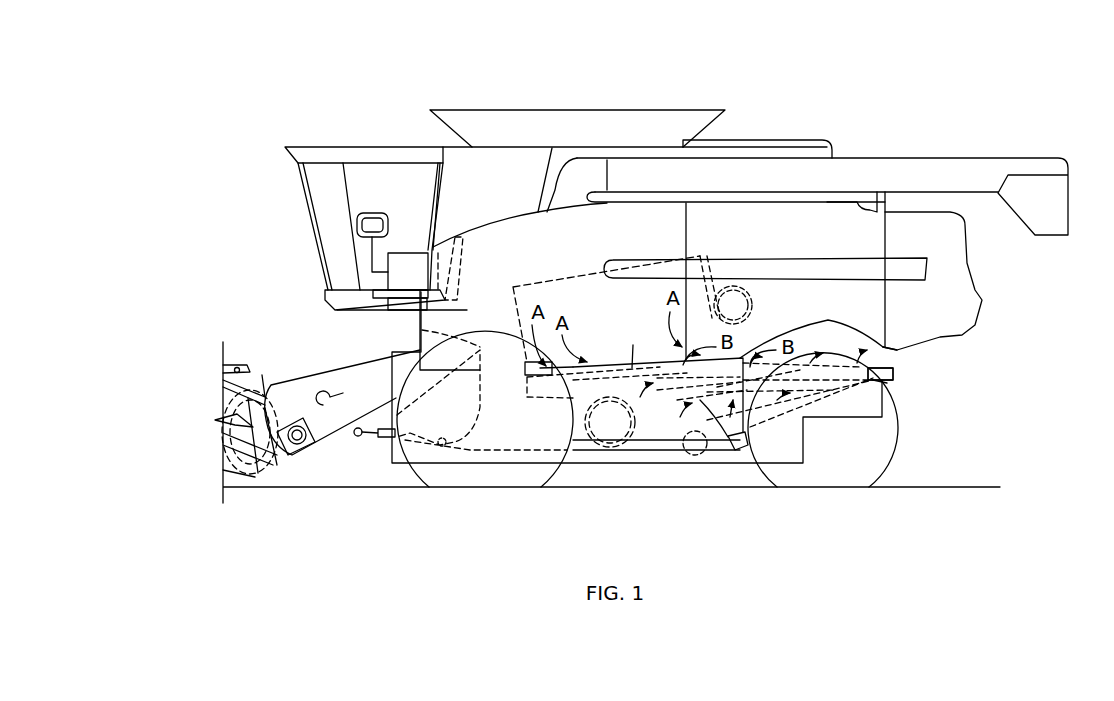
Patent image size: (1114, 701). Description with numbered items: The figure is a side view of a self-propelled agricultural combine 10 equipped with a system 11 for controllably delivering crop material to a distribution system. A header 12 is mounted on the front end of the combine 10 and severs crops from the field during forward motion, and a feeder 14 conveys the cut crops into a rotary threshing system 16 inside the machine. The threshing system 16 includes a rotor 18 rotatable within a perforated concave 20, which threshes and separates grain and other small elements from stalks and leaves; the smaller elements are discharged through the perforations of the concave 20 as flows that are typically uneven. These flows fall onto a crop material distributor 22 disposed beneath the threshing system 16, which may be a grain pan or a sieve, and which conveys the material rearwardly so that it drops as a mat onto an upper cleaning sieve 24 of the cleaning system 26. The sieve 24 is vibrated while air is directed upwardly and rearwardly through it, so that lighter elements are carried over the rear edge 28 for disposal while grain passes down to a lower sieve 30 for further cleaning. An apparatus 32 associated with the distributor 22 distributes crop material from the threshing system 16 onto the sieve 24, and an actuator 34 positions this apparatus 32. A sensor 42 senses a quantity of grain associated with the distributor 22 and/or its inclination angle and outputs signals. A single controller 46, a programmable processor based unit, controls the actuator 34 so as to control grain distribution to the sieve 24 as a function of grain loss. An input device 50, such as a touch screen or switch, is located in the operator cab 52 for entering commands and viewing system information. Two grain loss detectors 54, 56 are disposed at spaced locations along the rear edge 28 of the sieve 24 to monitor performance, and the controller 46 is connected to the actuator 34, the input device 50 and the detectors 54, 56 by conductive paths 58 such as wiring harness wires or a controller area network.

The agricultural combine 10 is at (905, 70).
The system 11 is at (770, 122).
The header 12 is at (233, 357).
The feeder 14 is at (300, 382).
The rotary threshing system 16 is at (560, 283).
The rotor 18 is at (697, 252).
The perforated concave 20 is at (598, 283).
The crop material distributor 22 is at (600, 368).
The upper cleaning sieve 24 is at (747, 358).
The cleaning system 26 is at (800, 342).
The rear edge 28 is at (905, 349).
The lower sieve 30 is at (728, 437).
The apparatus 32 is at (615, 360).
The actuator 34 is at (633, 345).
The sensor 42 is at (527, 362).
The controller 46 is at (413, 253).
The input device 50 is at (372, 215).
The operator cab 52 is at (302, 195).
The grain loss detector 54 is at (897, 373).
The grain loss detector 56 is at (880, 374).
The conductive paths 58 is at (420, 350).